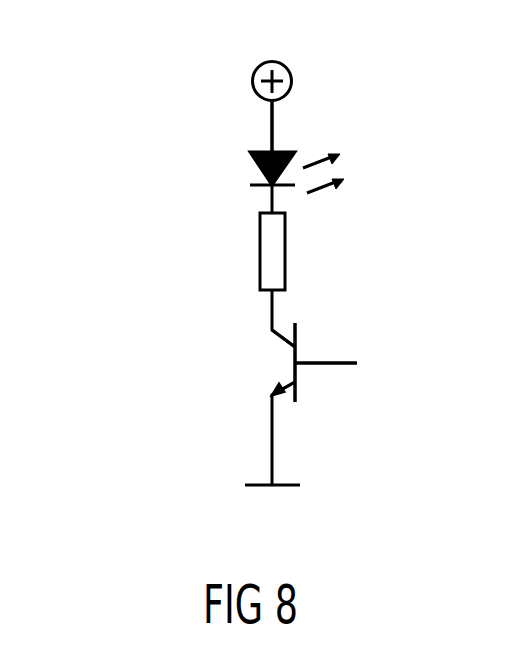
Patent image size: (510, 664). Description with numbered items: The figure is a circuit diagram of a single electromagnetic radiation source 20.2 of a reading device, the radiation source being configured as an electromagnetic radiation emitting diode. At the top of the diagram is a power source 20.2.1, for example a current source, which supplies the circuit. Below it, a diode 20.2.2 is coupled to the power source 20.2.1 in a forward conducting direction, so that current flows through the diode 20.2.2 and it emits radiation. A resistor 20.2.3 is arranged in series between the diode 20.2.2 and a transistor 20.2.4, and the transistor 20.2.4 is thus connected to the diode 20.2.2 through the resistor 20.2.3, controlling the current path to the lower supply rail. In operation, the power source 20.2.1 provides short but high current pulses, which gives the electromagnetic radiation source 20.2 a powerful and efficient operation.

The electromagnetic radiation source 20.2 is at (211, 74).
The power source 20.2.1 is at (292, 81).
The diode 20.2.2 is at (254, 163).
The resistor 20.2.3 is at (268, 253).
The transistor 20.2.4 is at (296, 353).